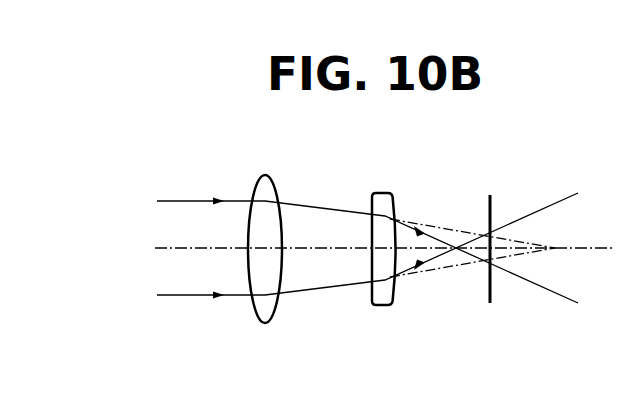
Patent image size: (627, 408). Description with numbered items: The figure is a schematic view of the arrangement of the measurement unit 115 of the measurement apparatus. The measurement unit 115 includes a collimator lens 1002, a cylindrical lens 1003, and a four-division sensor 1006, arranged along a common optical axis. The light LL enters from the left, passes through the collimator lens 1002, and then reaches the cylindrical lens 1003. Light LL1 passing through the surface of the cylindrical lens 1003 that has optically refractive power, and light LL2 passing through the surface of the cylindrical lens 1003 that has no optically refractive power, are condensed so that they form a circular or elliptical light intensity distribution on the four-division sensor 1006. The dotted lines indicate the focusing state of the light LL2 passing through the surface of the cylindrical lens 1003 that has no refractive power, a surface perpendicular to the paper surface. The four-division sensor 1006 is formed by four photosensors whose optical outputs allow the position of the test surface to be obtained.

The collimator lens 1002 is at (265, 175).
The cylindrical lens 1003 is at (380, 192).
The four-division sensor 1006 is at (490, 193).
The measurement unit 115 is at (503, 324).
The light LL is at (180, 199).
The light passing through refractive surface LL1 is at (437, 227).
The light passing through non-refractive surface LL2 is at (553, 207).